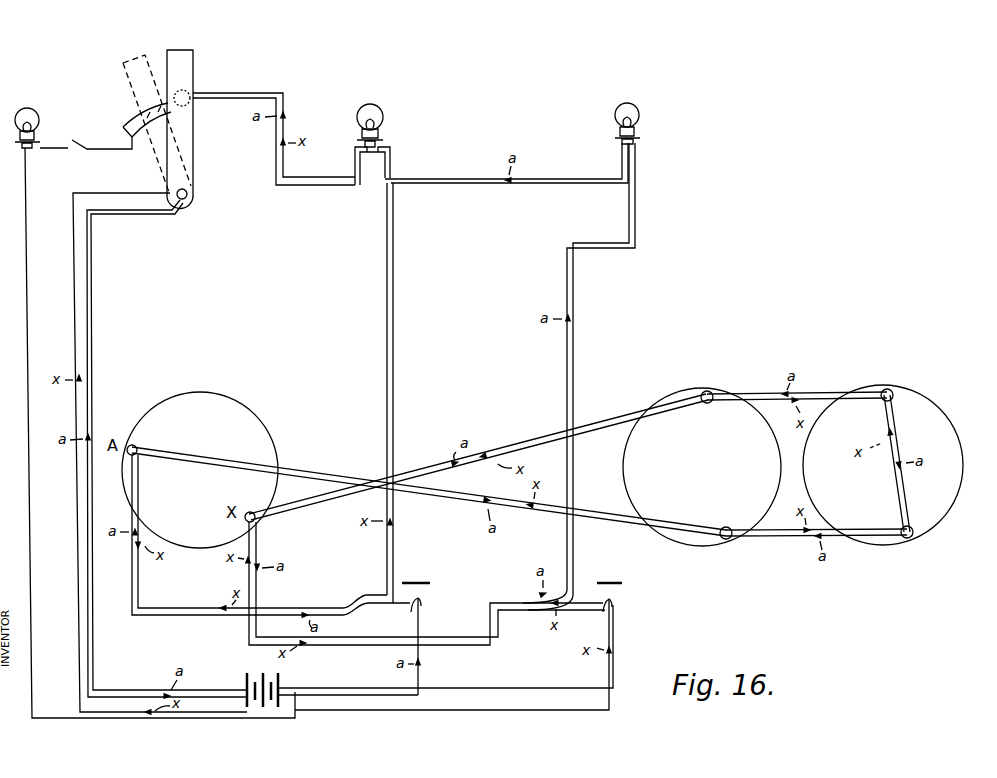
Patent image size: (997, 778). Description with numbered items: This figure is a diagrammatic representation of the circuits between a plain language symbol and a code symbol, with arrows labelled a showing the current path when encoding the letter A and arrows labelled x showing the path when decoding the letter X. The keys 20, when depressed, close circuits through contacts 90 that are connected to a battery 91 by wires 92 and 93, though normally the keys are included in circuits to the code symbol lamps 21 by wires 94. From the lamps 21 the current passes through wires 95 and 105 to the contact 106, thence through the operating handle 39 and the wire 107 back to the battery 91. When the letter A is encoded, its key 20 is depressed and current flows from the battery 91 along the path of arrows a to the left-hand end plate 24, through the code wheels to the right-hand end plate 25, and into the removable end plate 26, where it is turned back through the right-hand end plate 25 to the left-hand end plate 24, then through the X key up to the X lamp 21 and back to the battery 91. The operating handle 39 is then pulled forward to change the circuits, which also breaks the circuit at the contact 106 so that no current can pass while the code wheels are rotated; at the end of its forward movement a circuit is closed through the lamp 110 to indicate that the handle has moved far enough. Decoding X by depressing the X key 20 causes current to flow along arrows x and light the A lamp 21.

The lamp 110 is at (40, 118).
The operating handle 39 is at (147, 88).
The contact 106 is at (195, 93).
The code symbol lamps 21 is at (384, 111).
The wire 105 is at (357, 166).
The wire 95 is at (560, 186).
The wire 107 is at (91, 293).
The wires 94 is at (394, 311).
The left-hand end plate 24 is at (256, 446).
The right-hand end plate 25 is at (632, 463).
The removable end plate 26 is at (944, 446).
The keys 20 is at (432, 584).
The contacts 90 is at (425, 603).
The battery 91 is at (276, 676).
The wire 92 is at (421, 678).
The wire 93 is at (532, 690).